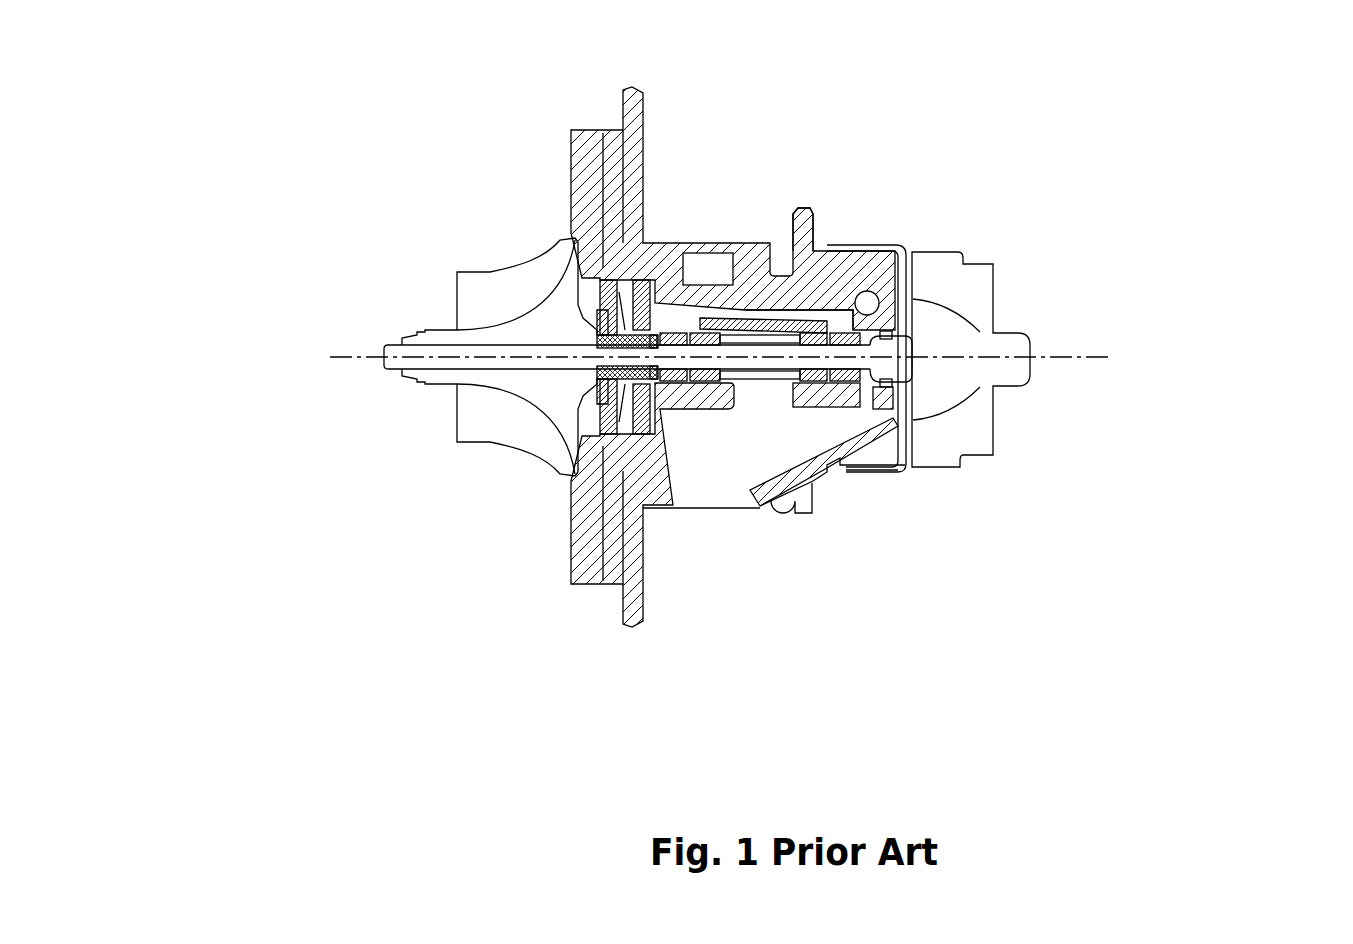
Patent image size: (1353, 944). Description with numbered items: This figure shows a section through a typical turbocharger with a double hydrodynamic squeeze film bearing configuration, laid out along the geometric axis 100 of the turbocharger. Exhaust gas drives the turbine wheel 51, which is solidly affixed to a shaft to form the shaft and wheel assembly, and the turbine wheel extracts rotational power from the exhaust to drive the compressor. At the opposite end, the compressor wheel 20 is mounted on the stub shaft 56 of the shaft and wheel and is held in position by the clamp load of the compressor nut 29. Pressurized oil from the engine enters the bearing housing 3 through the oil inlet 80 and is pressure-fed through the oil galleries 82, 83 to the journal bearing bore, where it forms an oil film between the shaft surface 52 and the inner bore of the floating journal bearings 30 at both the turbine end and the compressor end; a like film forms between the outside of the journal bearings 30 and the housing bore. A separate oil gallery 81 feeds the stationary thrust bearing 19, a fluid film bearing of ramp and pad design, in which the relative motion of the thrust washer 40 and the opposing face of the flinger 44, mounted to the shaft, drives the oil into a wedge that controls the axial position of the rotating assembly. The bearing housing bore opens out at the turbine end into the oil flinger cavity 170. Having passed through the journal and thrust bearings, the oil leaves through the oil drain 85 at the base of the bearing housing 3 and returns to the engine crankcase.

The bearing housing 3 is at (797, 240).
The thrust bearing 19 is at (655, 390).
The compressor wheel 20 is at (517, 397).
The compressor nut 29 is at (425, 377).
The journal bearings 30 is at (837, 405).
The thrust washer 40 is at (660, 388).
The flinger 44 is at (597, 375).
The turbine wheel 51 is at (937, 327).
The shaft surface 52 is at (597, 370).
The stub shaft 56 is at (535, 355).
The oil inlet 80 is at (700, 267).
The oil gallery 81 is at (663, 303).
The oil gallery 82 is at (813, 330).
The oil gallery 83 is at (687, 317).
The oil drain 85 is at (717, 490).
The geometric axis 100 is at (1082, 365).
The oil flinger cavity 170 is at (893, 275).